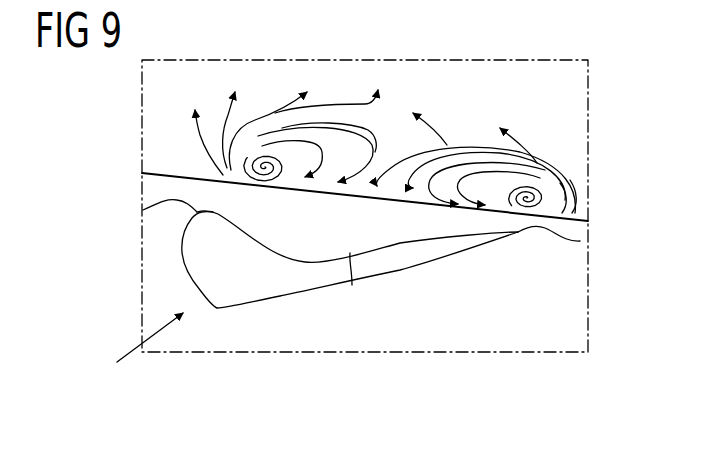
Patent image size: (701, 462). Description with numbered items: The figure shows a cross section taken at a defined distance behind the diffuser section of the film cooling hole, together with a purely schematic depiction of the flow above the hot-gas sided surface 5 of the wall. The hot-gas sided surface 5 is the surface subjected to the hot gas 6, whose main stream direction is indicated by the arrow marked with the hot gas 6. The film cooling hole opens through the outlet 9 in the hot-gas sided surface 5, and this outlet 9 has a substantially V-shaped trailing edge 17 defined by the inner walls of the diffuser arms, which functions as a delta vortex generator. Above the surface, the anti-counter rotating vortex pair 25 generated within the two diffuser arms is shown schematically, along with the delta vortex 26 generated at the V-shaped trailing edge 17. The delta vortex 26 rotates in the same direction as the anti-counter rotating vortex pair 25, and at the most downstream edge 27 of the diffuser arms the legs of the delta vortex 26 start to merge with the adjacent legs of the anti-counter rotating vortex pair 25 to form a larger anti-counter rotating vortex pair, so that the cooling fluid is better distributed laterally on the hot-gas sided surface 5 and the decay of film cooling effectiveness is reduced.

The hot-gas sided surface 5 is at (572, 302).
The hot gas 6 is at (128, 352).
The outlet 9 is at (320, 290).
The V-shaped trailing edge 17 is at (352, 285).
The anti-counter rotating vortex pair 25 is at (257, 142).
The delta vortex 26 is at (333, 153).
The most downstream edge 27 is at (143, 210).